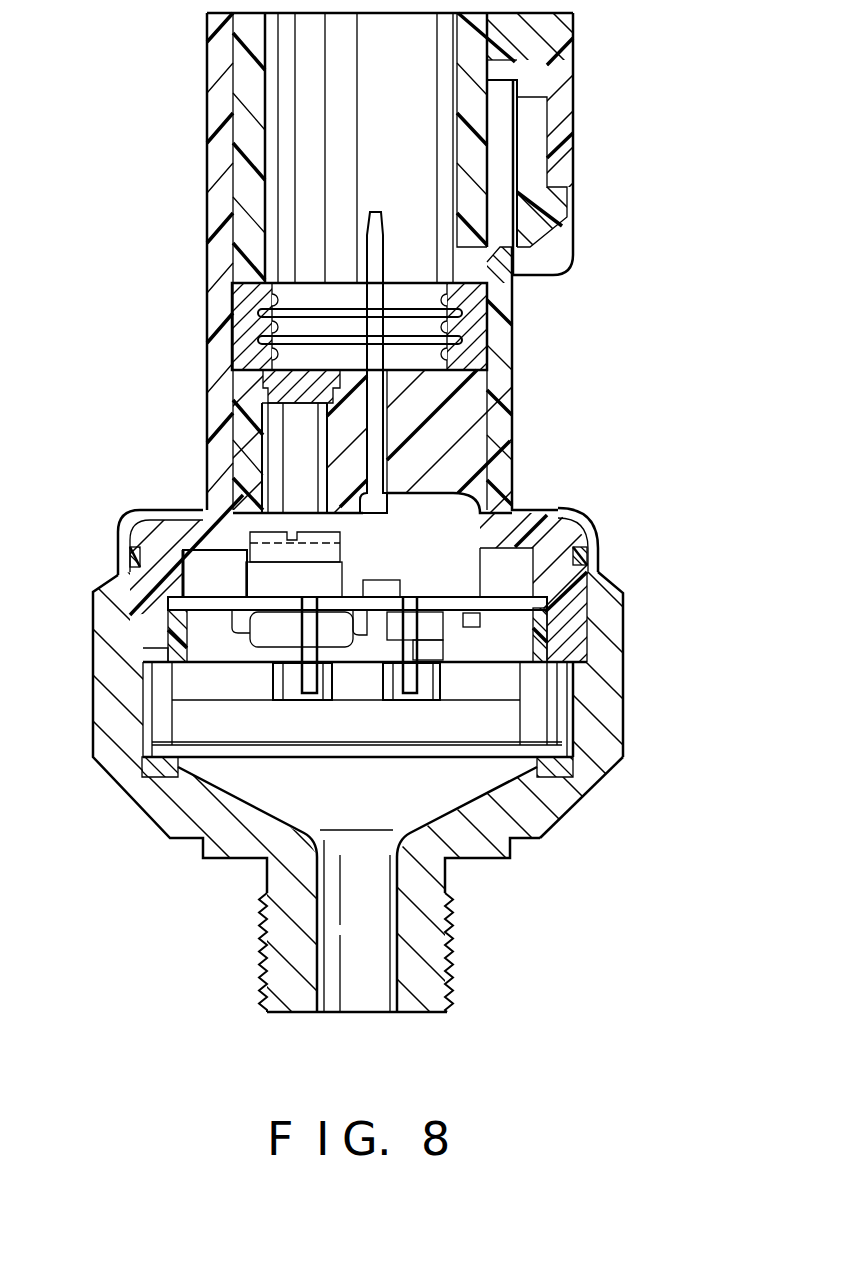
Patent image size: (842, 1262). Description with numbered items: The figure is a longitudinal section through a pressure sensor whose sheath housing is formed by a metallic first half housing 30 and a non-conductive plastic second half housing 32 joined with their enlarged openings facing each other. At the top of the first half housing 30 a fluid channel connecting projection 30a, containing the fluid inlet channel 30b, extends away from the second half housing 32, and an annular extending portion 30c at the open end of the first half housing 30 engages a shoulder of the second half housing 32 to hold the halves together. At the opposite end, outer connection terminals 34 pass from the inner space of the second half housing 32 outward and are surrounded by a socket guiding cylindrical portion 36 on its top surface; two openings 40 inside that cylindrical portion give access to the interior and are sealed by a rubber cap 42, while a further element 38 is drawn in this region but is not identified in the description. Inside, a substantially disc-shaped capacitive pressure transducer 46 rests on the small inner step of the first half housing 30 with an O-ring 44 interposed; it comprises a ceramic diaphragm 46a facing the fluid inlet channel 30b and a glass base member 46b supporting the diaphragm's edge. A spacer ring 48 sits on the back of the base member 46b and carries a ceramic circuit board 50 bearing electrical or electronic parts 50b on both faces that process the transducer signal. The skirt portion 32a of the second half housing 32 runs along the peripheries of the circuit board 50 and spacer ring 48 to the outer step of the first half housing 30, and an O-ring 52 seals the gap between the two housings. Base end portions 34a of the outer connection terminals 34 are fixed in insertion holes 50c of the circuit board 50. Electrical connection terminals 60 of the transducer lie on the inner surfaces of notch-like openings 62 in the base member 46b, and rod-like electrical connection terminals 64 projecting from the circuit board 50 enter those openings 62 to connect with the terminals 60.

The first half housing 30 is at (497, 857).
The fluid channel connecting projection 30a is at (450, 873).
The fluid inlet channel 30b is at (373, 988).
The annular extending portion 30c is at (590, 513).
The second half housing 32 is at (543, 533).
The skirt portion 32a is at (577, 652).
The outer connection terminals 34 is at (367, 240).
The base end portions 34a is at (485, 612).
The socket guiding cylindrical portion 36 is at (207, 192).
The connector shell 38 is at (573, 222).
The openings 40 is at (300, 435).
The rubber cap 42 is at (290, 397).
The O-ring 44 is at (577, 785).
The capacitive pressure transducer 46 is at (498, 718).
The diaphragm 46a is at (397, 750).
The base member 46b is at (314, 722).
The spacer ring 48 is at (550, 628).
The circuit board 50 is at (172, 600).
The electrical or electronic parts 50b is at (258, 548).
The electrical connection terminal insertion holes 50c is at (485, 590).
The O-ring 52 is at (593, 540).
The electrical connection terminals 60 is at (333, 680).
The openings 62 is at (277, 673).
The rod-like electrical connection terminals 64 is at (293, 682).